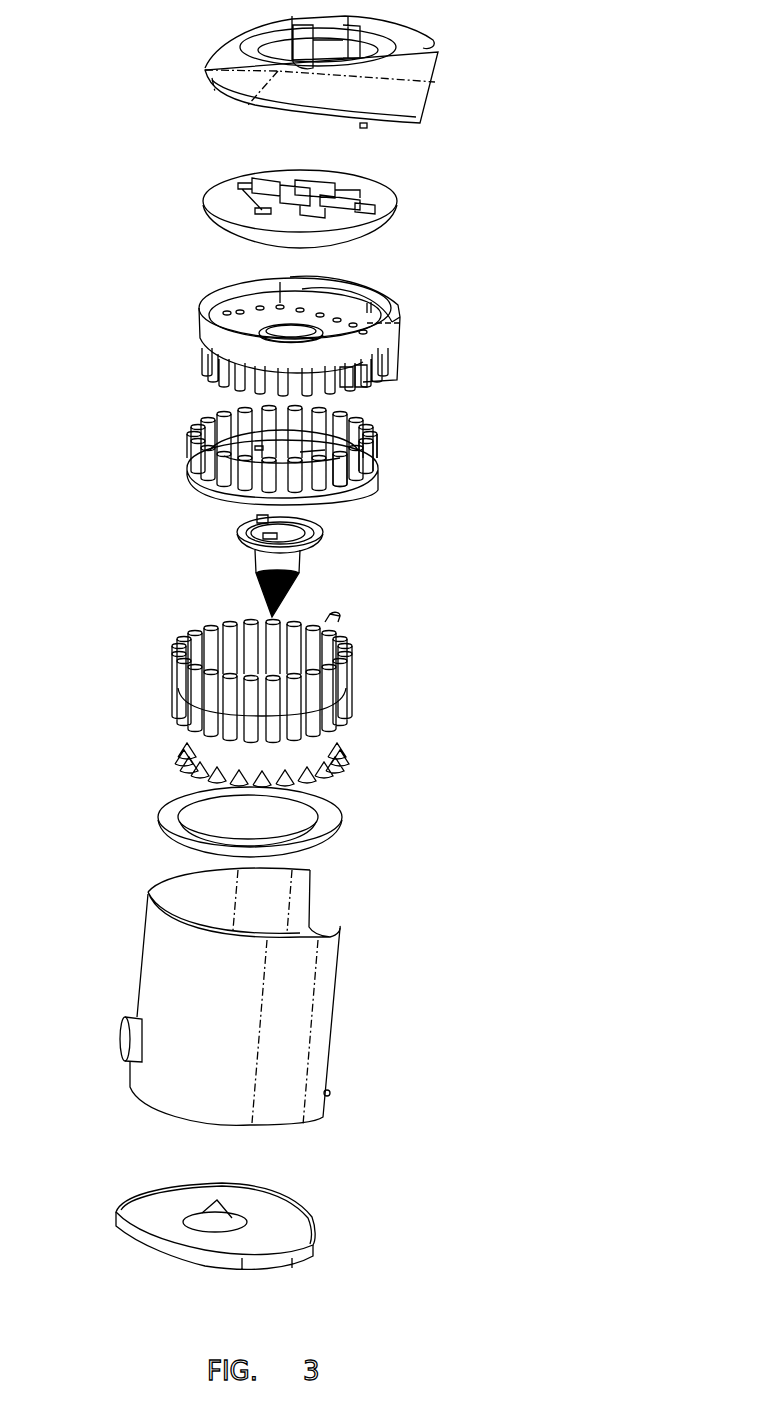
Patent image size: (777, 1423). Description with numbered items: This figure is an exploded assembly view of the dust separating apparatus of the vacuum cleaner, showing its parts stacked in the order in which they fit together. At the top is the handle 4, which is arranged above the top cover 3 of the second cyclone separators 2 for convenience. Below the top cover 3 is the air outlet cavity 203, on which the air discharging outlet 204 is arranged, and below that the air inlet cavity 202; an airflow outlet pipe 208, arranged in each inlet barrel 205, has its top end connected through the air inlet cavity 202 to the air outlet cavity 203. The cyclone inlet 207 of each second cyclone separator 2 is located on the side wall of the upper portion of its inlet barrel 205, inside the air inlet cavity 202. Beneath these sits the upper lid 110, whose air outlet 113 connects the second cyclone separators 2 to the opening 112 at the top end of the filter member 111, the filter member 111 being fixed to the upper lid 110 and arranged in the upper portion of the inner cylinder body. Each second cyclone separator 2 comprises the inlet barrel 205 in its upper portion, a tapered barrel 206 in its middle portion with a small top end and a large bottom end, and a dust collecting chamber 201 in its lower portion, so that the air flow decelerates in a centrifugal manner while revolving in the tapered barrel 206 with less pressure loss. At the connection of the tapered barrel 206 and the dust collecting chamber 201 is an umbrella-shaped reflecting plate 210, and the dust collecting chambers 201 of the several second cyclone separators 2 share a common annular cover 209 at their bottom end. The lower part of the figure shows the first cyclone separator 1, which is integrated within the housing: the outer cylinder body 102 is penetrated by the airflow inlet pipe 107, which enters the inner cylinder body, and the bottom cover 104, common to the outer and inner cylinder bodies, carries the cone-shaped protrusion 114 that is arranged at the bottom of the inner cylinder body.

The handle 4 is at (333, 45).
The top cover 3 is at (373, 227).
The air outlet cavity 203 is at (331, 324).
The air discharging outlet 204 is at (373, 315).
The airflow outlet pipe 208 is at (323, 390).
The cyclone inlet 207 is at (240, 420).
The air inlet cavity 202 is at (307, 447).
The air outlet 113 is at (367, 445).
The inlet barrel 205 is at (347, 473).
The upper lid 110 is at (313, 441).
The opening 112 is at (323, 535).
The filter member 111 is at (290, 565).
The tapered barrel 206 is at (340, 685).
The second cyclone separator 2 is at (314, 684).
The dust collecting chamber 201 is at (343, 727).
The umbrella-shaped reflecting plate 210 is at (323, 782).
The annular cover 209 is at (313, 833).
The first cyclone separator 1 is at (237, 996).
The airflow inlet pipe 107 is at (120, 1042).
The outer cylinder body 102 is at (320, 1090).
The cone-shaped protrusion 114 is at (213, 1212).
The bottom cover 104 is at (275, 1212).